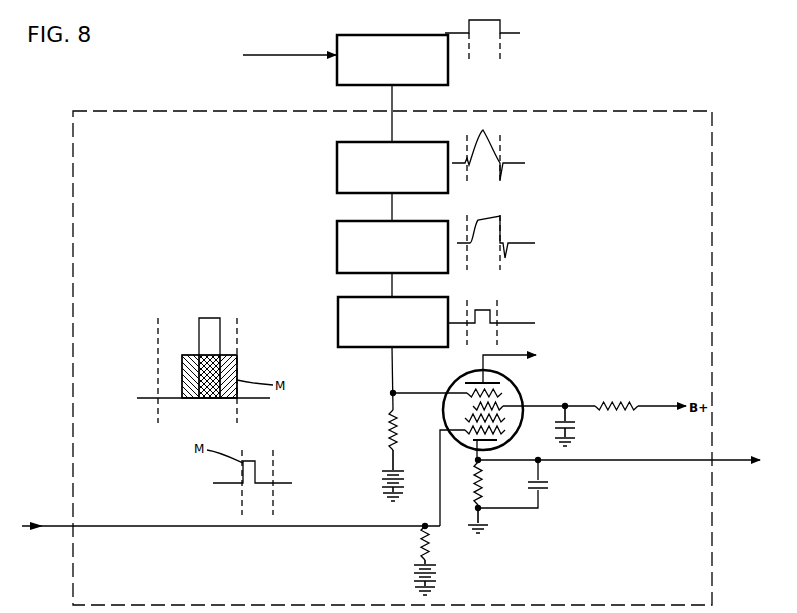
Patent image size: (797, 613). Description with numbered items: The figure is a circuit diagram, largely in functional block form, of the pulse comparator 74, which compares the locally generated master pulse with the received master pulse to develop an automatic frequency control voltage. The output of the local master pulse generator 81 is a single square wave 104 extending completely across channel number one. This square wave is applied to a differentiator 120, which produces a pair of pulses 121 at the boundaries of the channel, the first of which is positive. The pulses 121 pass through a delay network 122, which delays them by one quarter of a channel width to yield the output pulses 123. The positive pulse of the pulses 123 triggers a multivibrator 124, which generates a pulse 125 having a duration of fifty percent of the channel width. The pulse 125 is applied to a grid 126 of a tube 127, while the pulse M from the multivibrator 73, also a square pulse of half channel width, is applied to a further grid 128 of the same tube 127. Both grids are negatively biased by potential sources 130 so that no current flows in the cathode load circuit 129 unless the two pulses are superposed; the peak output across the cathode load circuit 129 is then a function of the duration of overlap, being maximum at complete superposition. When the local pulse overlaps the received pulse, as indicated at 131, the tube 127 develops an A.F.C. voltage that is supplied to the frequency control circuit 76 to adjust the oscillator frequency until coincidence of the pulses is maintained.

The pulse comparator 74 is at (392, 358).
The local master pulse generator 81 is at (425, 85).
The square wave 104 is at (484, 19).
The differentiator 120 is at (337, 148).
The pulses 121 is at (483, 130).
The delay network 122 is at (337, 238).
The output pulses 123 is at (500, 216).
The multivibrator 124 is at (338, 305).
The pulse 125 is at (482, 309).
The grid 126 is at (467, 393).
The tube 127 is at (523, 402).
The further grid 128 is at (465, 430).
The cathode load circuit 129 is at (482, 478).
The potential sources 130 is at (386, 480).
The overlap of pulses 131 is at (208, 343).
The frequency control circuit 76 is at (618, 464).
The multivibrator 73 is at (231, 532).